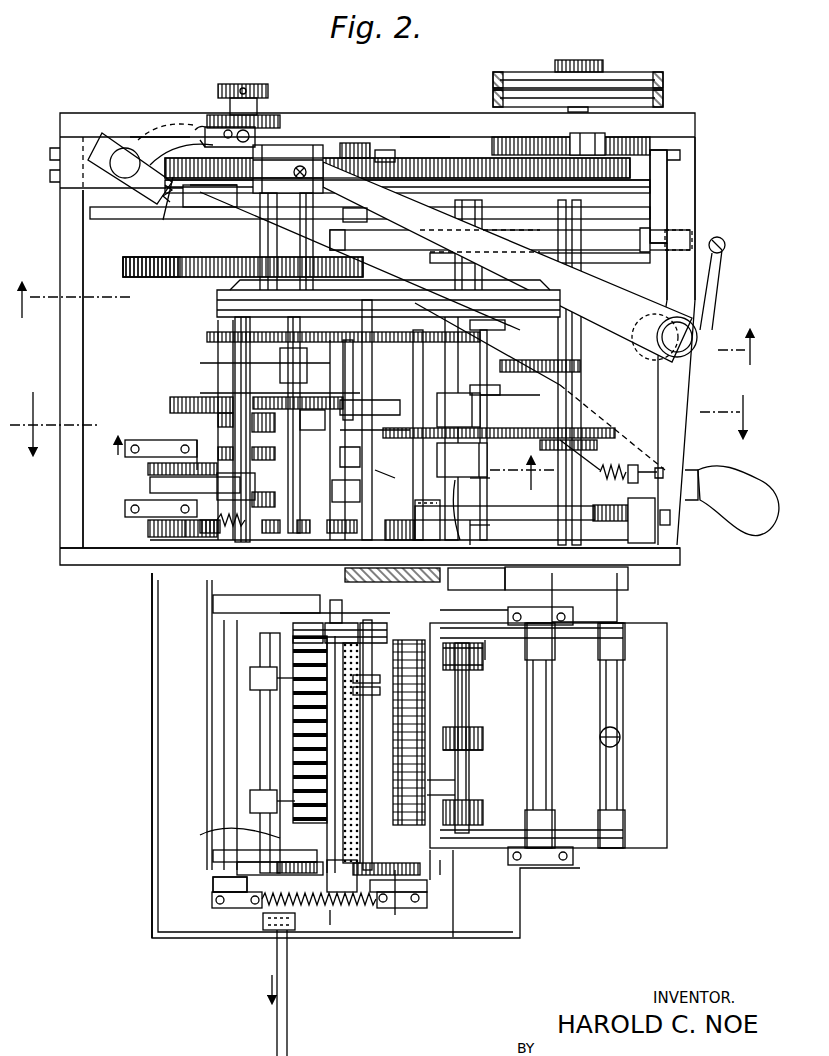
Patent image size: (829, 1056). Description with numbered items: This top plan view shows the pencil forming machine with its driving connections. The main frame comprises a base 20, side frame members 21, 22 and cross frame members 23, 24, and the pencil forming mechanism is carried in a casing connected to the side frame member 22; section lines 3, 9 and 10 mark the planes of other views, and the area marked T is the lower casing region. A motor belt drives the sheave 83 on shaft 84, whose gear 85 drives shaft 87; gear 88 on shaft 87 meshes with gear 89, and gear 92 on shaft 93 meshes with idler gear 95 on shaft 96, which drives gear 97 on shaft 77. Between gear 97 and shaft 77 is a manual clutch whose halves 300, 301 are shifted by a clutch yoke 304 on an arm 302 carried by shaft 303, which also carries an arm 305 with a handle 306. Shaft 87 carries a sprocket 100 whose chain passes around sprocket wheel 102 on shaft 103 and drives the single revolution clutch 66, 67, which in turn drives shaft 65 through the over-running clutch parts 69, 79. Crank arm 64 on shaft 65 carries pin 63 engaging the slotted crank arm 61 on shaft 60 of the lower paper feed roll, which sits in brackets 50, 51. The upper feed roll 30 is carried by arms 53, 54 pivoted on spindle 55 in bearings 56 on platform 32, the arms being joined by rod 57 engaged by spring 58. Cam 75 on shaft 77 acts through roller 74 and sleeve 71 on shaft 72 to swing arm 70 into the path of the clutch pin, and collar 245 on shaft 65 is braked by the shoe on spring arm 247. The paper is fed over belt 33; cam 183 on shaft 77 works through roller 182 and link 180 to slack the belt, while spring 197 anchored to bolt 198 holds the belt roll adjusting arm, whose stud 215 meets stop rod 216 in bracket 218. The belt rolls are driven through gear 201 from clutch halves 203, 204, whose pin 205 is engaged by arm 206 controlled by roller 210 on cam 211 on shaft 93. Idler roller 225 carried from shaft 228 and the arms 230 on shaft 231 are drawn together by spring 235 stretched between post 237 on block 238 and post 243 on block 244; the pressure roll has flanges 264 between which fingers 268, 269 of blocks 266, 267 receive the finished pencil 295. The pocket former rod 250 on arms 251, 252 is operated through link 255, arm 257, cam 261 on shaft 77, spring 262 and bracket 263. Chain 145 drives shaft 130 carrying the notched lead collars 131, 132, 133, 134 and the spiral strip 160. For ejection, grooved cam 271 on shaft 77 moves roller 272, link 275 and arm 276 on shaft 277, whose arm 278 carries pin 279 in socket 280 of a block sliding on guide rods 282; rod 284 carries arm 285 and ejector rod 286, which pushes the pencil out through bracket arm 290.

The section line 3- 3 is at (384, 421).
The section line 9- 9 is at (385, 323).
The direction arrow 10 is at (327, 457).
The base 20 is at (62, 574).
The side frame member 21 is at (412, 118).
The side frame member 22 is at (128, 566).
The cross frame member 23 is at (65, 342).
The cross frame member 24 is at (685, 183).
The upper paper feed roll 30 is at (485, 732).
The platform 32 is at (645, 685).
The endless belt 33 is at (430, 735).
The bracket 50 is at (492, 855).
The bracket 51 is at (490, 642).
The arm 53 is at (580, 835).
The arm 54 is at (587, 645).
The spindle 55 is at (542, 772).
The bearings 56 is at (565, 617).
The rod 57 is at (615, 790).
The spring 58 is at (621, 737).
The shaft 60 is at (485, 650).
The crank arm 61 is at (470, 615).
The pin 63 is at (478, 535).
The crank arm 64 is at (502, 587).
The shaft 65 is at (470, 530).
The single revolution clutch part 66 is at (515, 420).
The single revolution clutch part 67 is at (482, 400).
The outer part of over-running clutch 69 is at (462, 460).
The arm 70 is at (345, 390).
The sleeve 71 is at (300, 368).
The shaft 72 is at (296, 398).
The roller 74 is at (330, 415).
The cam 75 is at (170, 405).
The shaft 77 is at (247, 84).
The inner part of over-running clutch 79 is at (458, 500).
The sheave 83 is at (615, 80).
The shaft 84 is at (582, 60).
The gear 85 is at (578, 167).
The shaft 87 is at (525, 400).
The gear 88 is at (542, 148).
The gear 89 is at (655, 152).
The gear 92 is at (470, 168).
The shaft 93 is at (478, 333).
The idler gear 95 is at (387, 157).
The shaft 96 is at (350, 143).
The gear 97 is at (165, 215).
The sprocket 100 is at (585, 437).
The sprocket wheel 102 is at (400, 420).
The shaft 103 is at (459, 410).
The shaft 130 is at (472, 752).
The collar 131 is at (430, 795).
The collar 132 is at (430, 780).
The collar 133 is at (462, 675).
The collar 134 is at (372, 640).
The chain 145 is at (207, 337).
The spiral strip 160 is at (445, 872).
The link 180 is at (150, 484).
The roller 182 is at (150, 466).
The cam 183 is at (197, 465).
The spring 197 is at (625, 447).
The bolt 198 is at (640, 460).
The gear 201 is at (315, 535).
The clutch half 203 is at (410, 437).
The clutch half 204 is at (405, 452).
The pin 205 is at (395, 472).
The arm 206 is at (400, 480).
The roller 210 is at (400, 317).
The cam 211 is at (520, 368).
The stud 215 is at (350, 535).
The stop rod 216 is at (572, 512).
The bracket 218 is at (640, 530).
The idler roller 225 is at (472, 720).
The shaft 228 is at (432, 880).
The arms 230 is at (230, 605).
The shaft 231 is at (222, 880).
The spring 235 is at (330, 910).
The post 237 is at (385, 905).
The block 238 is at (415, 910).
The post 243 is at (265, 920).
The block 244 is at (240, 902).
The collar 245 is at (470, 476).
The spring arm 247 is at (430, 546).
The rod 250 is at (270, 780).
The arm 251 is at (265, 637).
The arm 252 is at (222, 852).
The link 255 is at (150, 528).
The arm 257 is at (140, 520).
The cam 261 is at (185, 525).
The spring 262 is at (225, 530).
The bracket 263 is at (400, 535).
The flanges 264 is at (293, 715).
The block 266 is at (250, 685).
The block 267 is at (200, 835).
The finger 268 is at (258, 903).
The finger 269 is at (336, 623).
The grooved cam 271 is at (160, 273).
The roller 272 is at (360, 262).
The link 275 is at (612, 240).
The arm 276 is at (716, 282).
The shaft 277 is at (690, 350).
The arm 278 is at (600, 300).
The pin 279 is at (302, 162).
The socket 280 is at (277, 160).
The guide rods 282 is at (262, 237).
The rod 284 is at (217, 307).
The arm 285 is at (345, 575).
The ejector rod 286 is at (175, 662).
The arm 290 is at (280, 930).
The pencil 295 is at (275, 657).
The clutch half 300 is at (210, 185).
The clutch half 301 is at (220, 122).
The arm 302 is at (150, 130).
The shaft 303 is at (98, 188).
The clutch yoke 304 is at (233, 127).
The arm 305 is at (121, 170).
The handle 306 is at (740, 490).
The table T is at (152, 774).